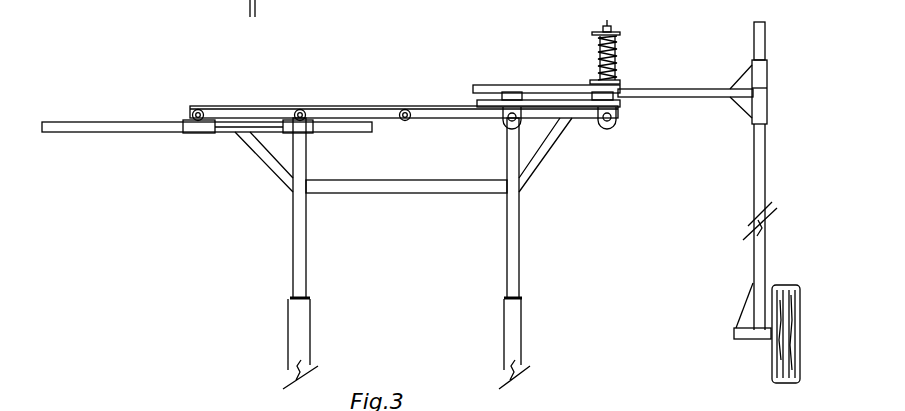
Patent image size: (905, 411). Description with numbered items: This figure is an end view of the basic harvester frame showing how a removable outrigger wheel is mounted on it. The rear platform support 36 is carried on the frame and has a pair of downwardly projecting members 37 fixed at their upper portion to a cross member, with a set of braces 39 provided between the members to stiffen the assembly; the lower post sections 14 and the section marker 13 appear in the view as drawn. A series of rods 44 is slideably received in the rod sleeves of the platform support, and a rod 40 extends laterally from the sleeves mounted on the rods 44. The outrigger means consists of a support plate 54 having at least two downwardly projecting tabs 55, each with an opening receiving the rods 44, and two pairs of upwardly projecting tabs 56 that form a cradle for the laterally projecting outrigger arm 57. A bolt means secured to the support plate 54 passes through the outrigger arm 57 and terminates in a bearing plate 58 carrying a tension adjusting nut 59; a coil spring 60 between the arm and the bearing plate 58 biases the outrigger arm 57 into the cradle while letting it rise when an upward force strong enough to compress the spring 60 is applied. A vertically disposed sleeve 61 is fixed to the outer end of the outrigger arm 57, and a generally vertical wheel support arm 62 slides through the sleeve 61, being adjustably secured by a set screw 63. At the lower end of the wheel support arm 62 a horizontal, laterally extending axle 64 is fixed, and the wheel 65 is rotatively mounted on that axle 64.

The section line 13 is at (263, 0).
The lower post section 14 is at (517, 340).
The rear platform support 36 is at (373, 107).
The downwardly projecting members 37 is at (306, 275).
The braces 39 is at (271, 166).
The rail 40 is at (133, 132).
The rods 44 is at (196, 109).
The support plate 54 is at (472, 106).
The downwardly projecting tabs 55 is at (505, 121).
The upwardly projecting tabs 56 is at (512, 92).
The outrigger arm 57 is at (706, 92).
The bearing plate 58 is at (620, 33).
The tension adjusting nut 59 is at (604, 24).
The spring 60 is at (598, 62).
The sleeve 61 is at (760, 84).
The wheel support arm 62 is at (765, 40).
The set screw 63 is at (767, 88).
The axle 64 is at (754, 339).
The wheel 65 is at (800, 315).